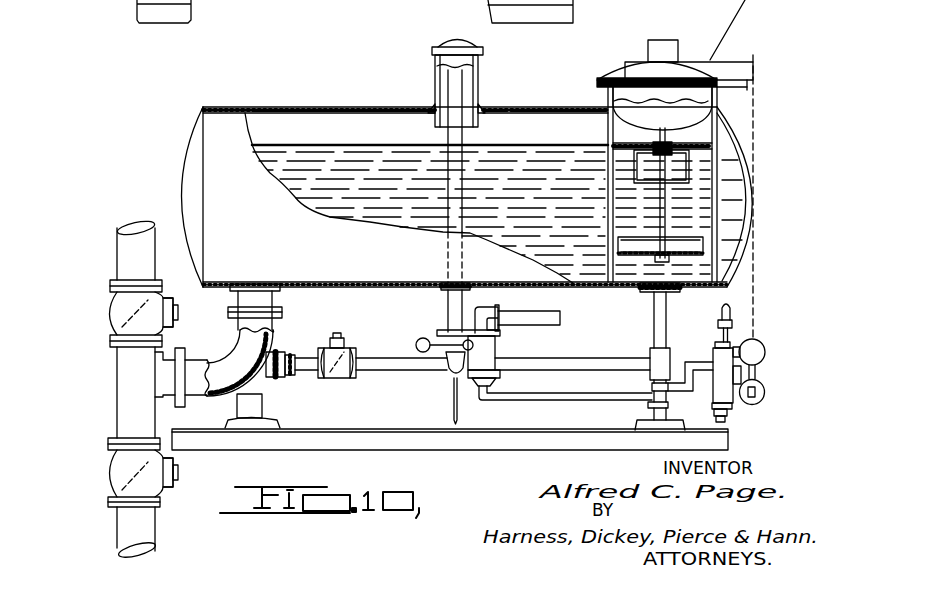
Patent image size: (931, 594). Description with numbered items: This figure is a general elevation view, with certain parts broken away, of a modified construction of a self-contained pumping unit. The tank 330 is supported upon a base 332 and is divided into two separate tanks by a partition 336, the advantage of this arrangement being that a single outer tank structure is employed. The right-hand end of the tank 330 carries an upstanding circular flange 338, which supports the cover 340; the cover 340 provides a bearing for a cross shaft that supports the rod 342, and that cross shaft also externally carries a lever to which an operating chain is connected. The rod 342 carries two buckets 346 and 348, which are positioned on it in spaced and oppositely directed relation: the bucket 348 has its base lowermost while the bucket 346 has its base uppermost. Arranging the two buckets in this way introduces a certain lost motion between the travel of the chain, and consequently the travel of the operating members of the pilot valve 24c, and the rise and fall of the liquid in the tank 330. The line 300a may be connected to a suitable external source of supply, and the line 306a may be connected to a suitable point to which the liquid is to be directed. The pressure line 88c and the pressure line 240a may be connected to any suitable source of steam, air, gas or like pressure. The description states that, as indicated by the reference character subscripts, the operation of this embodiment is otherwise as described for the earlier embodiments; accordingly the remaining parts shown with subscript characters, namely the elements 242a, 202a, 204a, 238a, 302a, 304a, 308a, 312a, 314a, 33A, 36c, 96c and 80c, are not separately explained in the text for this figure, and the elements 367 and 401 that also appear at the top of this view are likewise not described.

The tank 330 is at (345, 107).
The vent standpipe 242a is at (450, 137).
The upstanding circular flange 338 is at (610, 97).
The partition 336 is at (608, 153).
The cover 340 is at (683, 68).
The rod 342 is at (665, 122).
The bucket 346 is at (690, 148).
The cable line 80c is at (757, 210).
The bucket 348 is at (703, 250).
The pipe 36c is at (660, 306).
The pressure line 88c is at (730, 325).
The pilot valve 24c is at (735, 342).
The drain fitting 96c is at (728, 418).
The line 300a is at (122, 270).
The valve 302a is at (120, 313).
The valve 308a is at (108, 478).
The line 306a is at (138, 530).
The elbow 304a is at (275, 340).
The valve 312a is at (385, 352).
The support 33A is at (268, 398).
The nipple 314a is at (347, 380).
The needle 238a is at (452, 400).
The pressure line 240a is at (515, 325).
The valve 202a is at (497, 352).
The pipe 204a is at (532, 400).
The base 332 is at (455, 451).
The element 367 is at (384, 0).
The element 401 is at (418, 0).